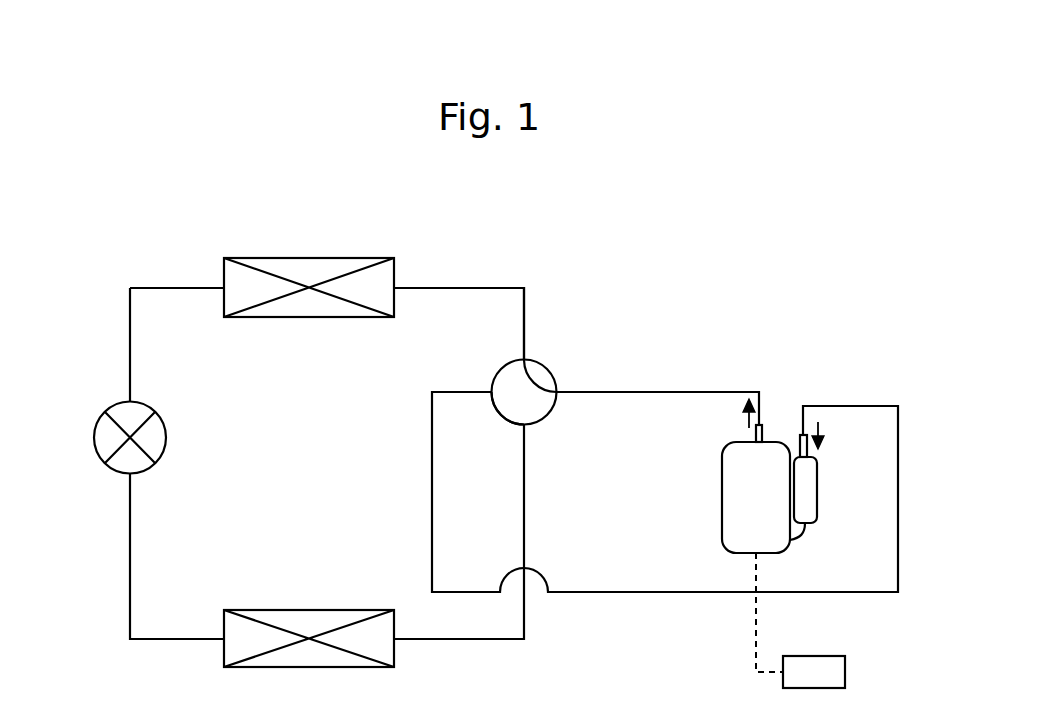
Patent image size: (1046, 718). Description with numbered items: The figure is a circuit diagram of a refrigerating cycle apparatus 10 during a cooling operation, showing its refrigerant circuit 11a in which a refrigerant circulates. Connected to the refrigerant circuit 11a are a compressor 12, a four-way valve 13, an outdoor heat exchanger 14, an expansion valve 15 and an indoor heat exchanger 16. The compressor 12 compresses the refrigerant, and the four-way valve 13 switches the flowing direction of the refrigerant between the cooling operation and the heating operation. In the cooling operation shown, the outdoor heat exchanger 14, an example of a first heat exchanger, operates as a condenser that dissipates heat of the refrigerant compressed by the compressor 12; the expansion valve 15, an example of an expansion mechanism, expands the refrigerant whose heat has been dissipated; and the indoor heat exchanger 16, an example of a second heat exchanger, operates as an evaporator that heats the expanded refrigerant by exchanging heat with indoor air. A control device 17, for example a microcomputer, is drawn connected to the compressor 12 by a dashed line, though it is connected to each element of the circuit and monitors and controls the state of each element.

The refrigerating cycle apparatus 10 is at (829, 260).
The refrigerant circuit 11a is at (448, 286).
The compressor 12 is at (722, 522).
The four-way valve 13 is at (550, 367).
The outdoor heat exchanger 14 is at (318, 257).
The expansion valve 15 is at (147, 400).
The indoor heat exchanger 16 is at (318, 608).
The control device 17 is at (815, 655).